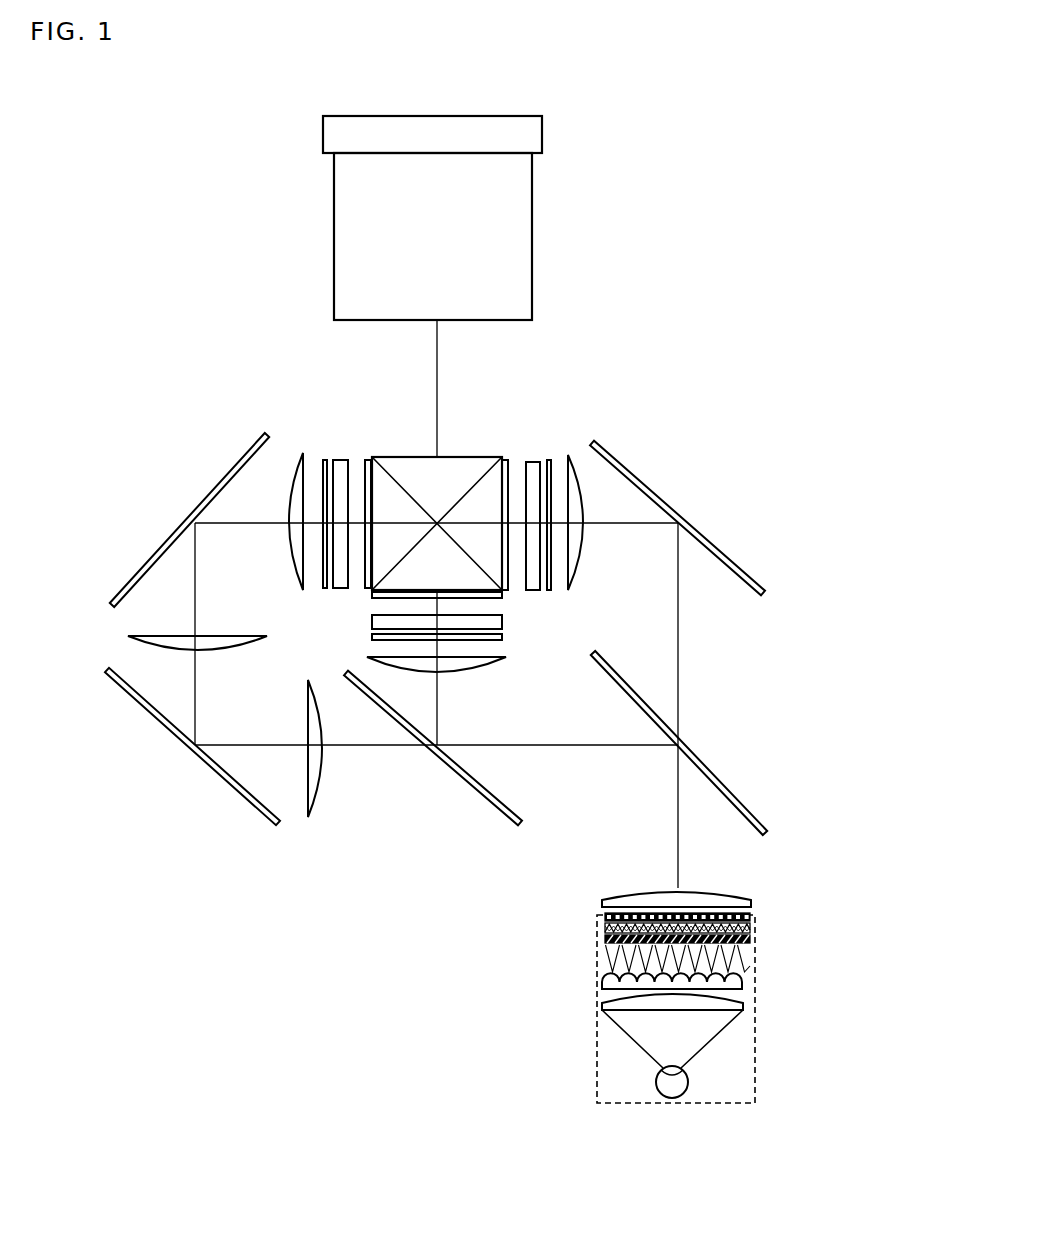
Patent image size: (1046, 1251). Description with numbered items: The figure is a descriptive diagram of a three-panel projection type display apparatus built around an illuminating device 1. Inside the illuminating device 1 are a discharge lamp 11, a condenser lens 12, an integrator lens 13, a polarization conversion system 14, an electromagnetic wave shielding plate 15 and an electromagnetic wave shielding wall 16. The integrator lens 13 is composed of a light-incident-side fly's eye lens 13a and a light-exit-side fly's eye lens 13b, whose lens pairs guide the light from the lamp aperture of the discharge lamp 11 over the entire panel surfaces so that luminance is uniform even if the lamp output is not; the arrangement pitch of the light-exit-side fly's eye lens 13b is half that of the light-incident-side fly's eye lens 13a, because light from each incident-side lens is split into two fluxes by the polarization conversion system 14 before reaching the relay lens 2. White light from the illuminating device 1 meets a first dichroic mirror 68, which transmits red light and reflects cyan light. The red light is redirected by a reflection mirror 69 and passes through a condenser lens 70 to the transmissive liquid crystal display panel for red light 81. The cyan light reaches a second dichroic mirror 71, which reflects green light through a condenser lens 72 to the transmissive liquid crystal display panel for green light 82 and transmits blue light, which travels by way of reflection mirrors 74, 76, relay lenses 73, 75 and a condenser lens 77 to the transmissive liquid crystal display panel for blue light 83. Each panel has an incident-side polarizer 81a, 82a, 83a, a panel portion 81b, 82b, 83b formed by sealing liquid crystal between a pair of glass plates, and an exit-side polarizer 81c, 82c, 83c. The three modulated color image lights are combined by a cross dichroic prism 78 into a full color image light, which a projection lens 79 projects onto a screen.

The illuminating device 1 is at (822, 948).
The relay lens 2 is at (752, 906).
The discharge lamp 11 is at (657, 1085).
The condenser lens 12 is at (603, 1005).
The integrator lens 13 is at (643, 954).
The light-incident-side fly's eye lens 13a is at (640, 980).
The light-exit-side fly's eye lens 13b is at (605, 925).
The polarization conversion system 14 is at (752, 940).
The electromagnetic wave shielding plate 15 is at (752, 913).
The electromagnetic wave shielding wall 16 is at (756, 1080).
The first dichroic mirror 68 is at (728, 791).
The reflection mirror 69 is at (720, 553).
The condenser lens 70 is at (576, 452).
The second dichroic mirror 71 is at (492, 798).
The condenser lens 72 is at (507, 660).
The relay lens 73 is at (322, 788).
The reflection mirror 74 is at (142, 703).
The relay lens 75 is at (232, 633).
The reflection mirror 76 is at (139, 568).
The condenser lens 77 is at (301, 450).
The cross dichroic prism 78 is at (404, 466).
The projection lens 79 is at (518, 210).
The transmissive liquid crystal display panel for red light 81 is at (532, 470).
The incident-side polarizer 81a is at (566, 487).
The panel portion 81b is at (532, 457).
The exit-side polarizer 81c is at (505, 455).
The transmissive liquid crystal display panel for green light 82 is at (492, 625).
The incident-side polarizer 82a is at (471, 646).
The panel portion 82b is at (503, 622).
The exit-side polarizer 82c is at (502, 597).
The transmissive liquid crystal display panel for blue light 83 is at (338, 469).
The incident-side polarizer 83a is at (324, 457).
The panel portion 83b is at (340, 455).
The exit-side polarizer 83c is at (378, 486).